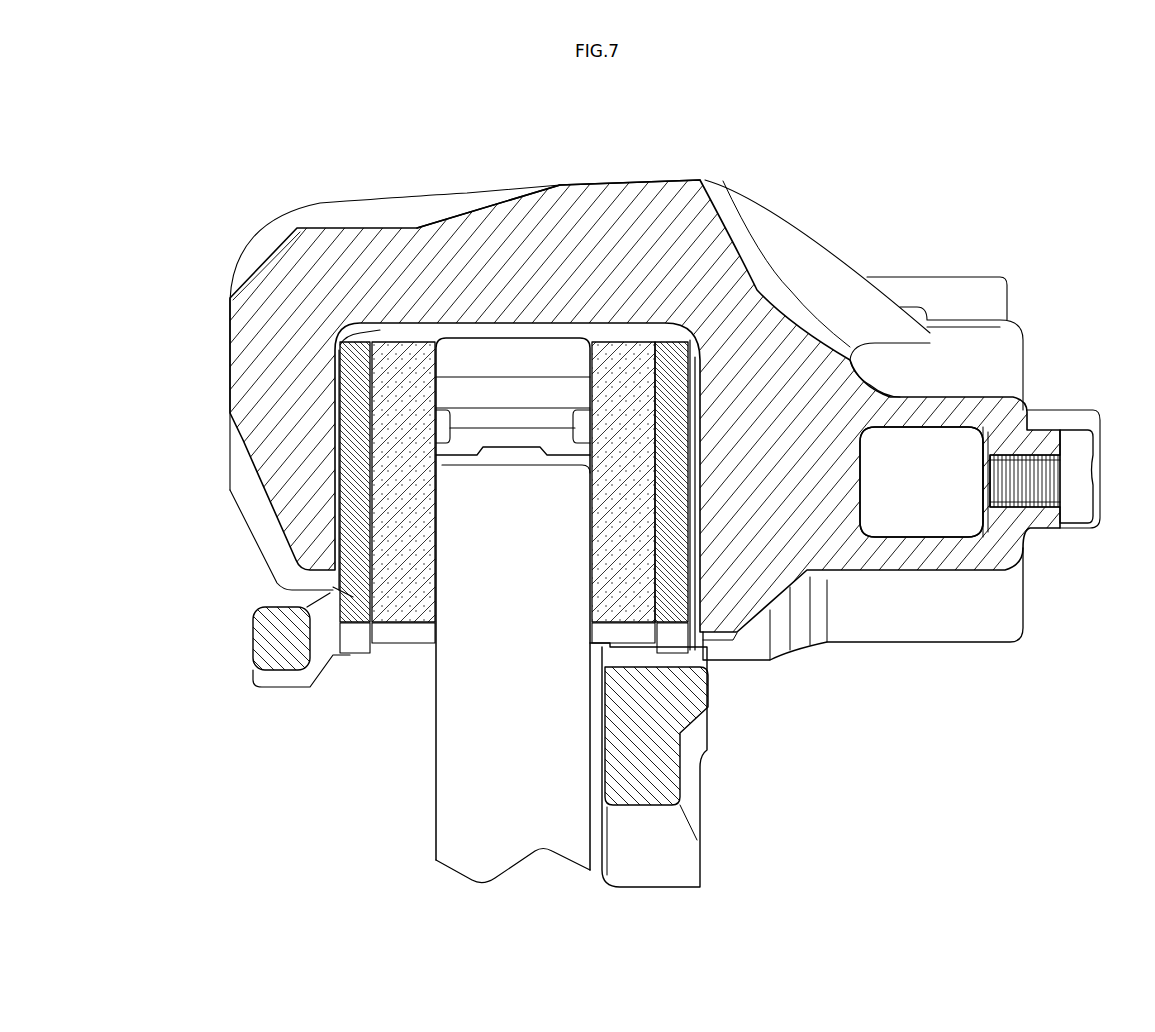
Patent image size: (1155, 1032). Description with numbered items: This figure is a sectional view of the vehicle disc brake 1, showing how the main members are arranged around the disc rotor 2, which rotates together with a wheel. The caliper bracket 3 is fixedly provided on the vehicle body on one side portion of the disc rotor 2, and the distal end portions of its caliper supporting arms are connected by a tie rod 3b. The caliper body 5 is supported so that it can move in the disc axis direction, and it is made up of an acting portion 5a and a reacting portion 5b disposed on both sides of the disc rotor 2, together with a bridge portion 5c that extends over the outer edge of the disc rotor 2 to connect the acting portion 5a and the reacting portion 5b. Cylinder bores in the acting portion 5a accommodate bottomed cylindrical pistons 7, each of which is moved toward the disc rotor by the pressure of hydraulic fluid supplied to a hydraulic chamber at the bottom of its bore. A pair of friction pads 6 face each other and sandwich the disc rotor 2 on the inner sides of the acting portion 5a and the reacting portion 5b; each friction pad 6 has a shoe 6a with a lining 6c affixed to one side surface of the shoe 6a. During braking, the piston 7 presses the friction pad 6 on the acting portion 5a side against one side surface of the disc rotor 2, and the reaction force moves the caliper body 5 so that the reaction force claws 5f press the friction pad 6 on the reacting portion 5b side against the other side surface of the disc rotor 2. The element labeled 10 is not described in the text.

The vehicle disc brake 1 is at (608, 115).
The disc rotor 2 is at (445, 802).
The caliper bracket 3 is at (705, 793).
The tie rod 3b is at (262, 628).
The caliper body 5 is at (752, 180).
The acting portion 5a is at (887, 638).
The reacting portion 5b is at (240, 318).
The bridge portion 5c is at (500, 218).
The reaction force claws 5f is at (285, 530).
The friction pad 6 is at (424, 703).
The shoe 6a is at (352, 626).
The lining 6c is at (395, 626).
The piston 7 is at (918, 523).
The piston projection 10 is at (503, 450).